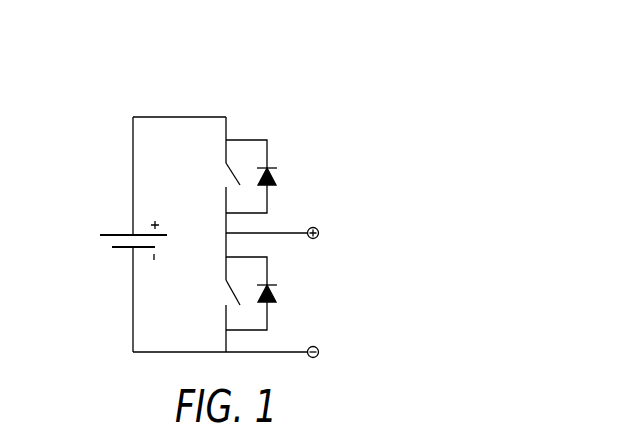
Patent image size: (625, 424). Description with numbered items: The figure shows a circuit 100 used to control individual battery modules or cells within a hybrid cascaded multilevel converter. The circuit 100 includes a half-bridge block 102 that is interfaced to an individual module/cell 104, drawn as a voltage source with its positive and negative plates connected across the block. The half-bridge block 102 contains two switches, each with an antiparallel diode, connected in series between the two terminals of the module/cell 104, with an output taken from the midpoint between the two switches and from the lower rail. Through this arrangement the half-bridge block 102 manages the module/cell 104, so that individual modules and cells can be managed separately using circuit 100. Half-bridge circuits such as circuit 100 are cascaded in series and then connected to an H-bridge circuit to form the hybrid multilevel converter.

The circuit 100 is at (277, 74).
The half-bridge block 102 is at (287, 194).
The module/cell 104 is at (117, 222).